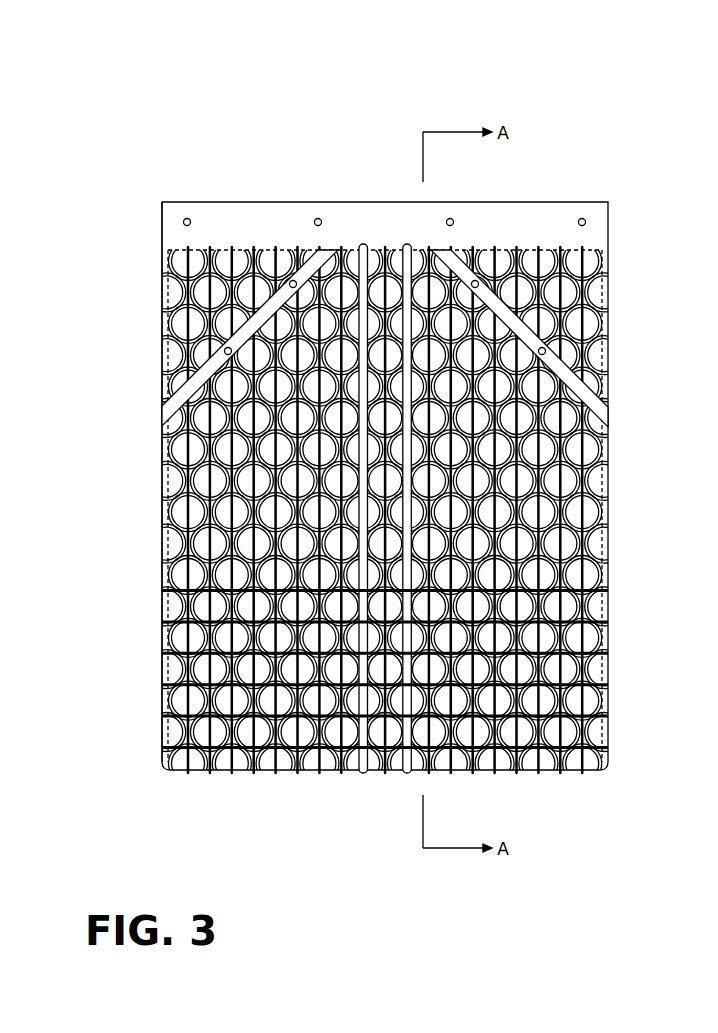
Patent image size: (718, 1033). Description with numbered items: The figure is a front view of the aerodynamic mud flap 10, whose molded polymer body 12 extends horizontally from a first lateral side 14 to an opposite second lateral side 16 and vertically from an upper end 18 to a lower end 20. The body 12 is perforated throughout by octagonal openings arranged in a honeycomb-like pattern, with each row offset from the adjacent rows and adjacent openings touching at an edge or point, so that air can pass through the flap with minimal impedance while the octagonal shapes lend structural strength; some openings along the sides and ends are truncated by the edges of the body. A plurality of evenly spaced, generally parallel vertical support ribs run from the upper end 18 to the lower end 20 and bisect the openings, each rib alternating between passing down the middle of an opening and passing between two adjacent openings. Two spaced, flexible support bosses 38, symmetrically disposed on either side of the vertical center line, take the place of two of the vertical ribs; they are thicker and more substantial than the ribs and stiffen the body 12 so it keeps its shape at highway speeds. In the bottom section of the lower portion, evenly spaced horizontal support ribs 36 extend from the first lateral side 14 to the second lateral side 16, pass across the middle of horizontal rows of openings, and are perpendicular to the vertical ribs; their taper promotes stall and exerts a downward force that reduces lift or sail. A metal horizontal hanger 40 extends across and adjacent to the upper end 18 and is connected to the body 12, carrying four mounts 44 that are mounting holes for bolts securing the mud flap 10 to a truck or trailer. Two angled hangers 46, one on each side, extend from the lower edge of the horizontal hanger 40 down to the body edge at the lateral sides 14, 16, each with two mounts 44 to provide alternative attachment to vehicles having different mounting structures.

The aerodynamic mud flap 10 is at (290, 122).
The body 12 is at (157, 548).
The first lateral side 14 is at (162, 325).
The second lateral side 16 is at (610, 535).
The upper end 18 is at (537, 248).
The lower end 20 is at (262, 772).
The horizontally extending support ribs 36 is at (610, 598).
The support bosses 38 is at (406, 244).
The horizontal hanger 40 is at (520, 194).
The mount 44 is at (228, 347).
The angled hanger 46 is at (172, 402).